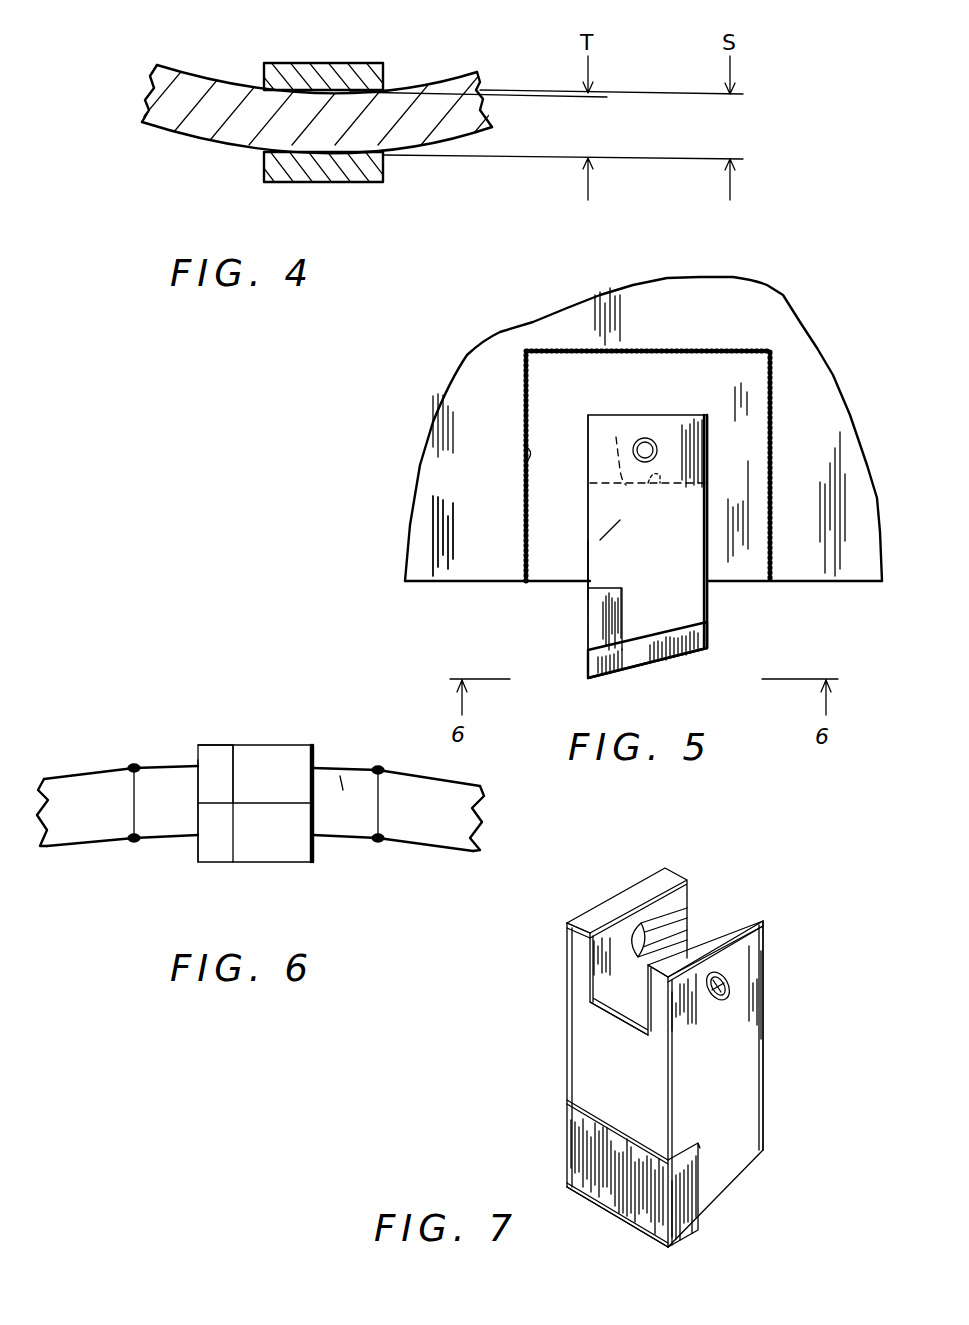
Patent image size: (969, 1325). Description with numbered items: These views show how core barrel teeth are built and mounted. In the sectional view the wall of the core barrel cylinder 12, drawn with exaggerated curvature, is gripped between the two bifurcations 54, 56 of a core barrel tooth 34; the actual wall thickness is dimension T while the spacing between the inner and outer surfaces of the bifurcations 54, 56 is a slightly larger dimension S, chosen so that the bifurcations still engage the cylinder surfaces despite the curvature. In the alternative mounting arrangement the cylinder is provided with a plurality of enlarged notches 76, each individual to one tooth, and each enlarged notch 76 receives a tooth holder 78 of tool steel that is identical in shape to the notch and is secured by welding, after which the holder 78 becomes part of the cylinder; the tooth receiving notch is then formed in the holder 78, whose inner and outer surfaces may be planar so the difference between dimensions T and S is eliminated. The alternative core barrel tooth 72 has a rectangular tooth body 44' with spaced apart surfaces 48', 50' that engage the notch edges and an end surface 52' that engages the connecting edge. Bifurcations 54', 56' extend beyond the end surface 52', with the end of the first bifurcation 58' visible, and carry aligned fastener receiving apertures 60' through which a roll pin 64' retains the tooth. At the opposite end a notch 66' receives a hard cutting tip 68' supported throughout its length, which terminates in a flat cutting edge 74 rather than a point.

In FIG. 4, the core barrel cylinder 12 is at (231, 70).
In FIG. 4, the bifurcation 54 is at (320, 50).
In FIG. 4, the core barrel tooth 34 is at (249, 170).
In FIG. 4, the bifurcation 56 is at (328, 187).
In FIG. 5, the tooth holder 78 is at (572, 375).
In FIG. 6, the tooth holder 78 is at (341, 790).
In FIG. 5, the enlarged notch 76 is at (527, 452).
In FIG. 6, the enlarged notch 76 is at (376, 792).
In FIG. 7, the core barrel tooth 72 is at (555, 1031).
In FIG. 7, the tooth body surface 48' is at (576, 1051).
In FIG. 7, the cutting tip 68' is at (574, 1176).
In FIG. 7, the flat cutting edge 74 is at (622, 1218).
In FIG. 7, the tooth body 44' is at (750, 1084).
In FIG. 7, the tooth body surface 50' is at (745, 1035).
In FIG. 7, the bifurcation 56' is at (733, 924).
In FIG. 7, the notch 66' is at (724, 1197).
In FIG. 7, the bifurcation 54' is at (594, 918).
In FIG. 7, the fastener receiving aperture 58' is at (569, 903).
In FIG. 7, the roll pin 64' is at (687, 914).
In FIG. 7, the end surface 52' is at (612, 1030).
In FIG. 7, the fastener receiving aperture 60' is at (767, 986).